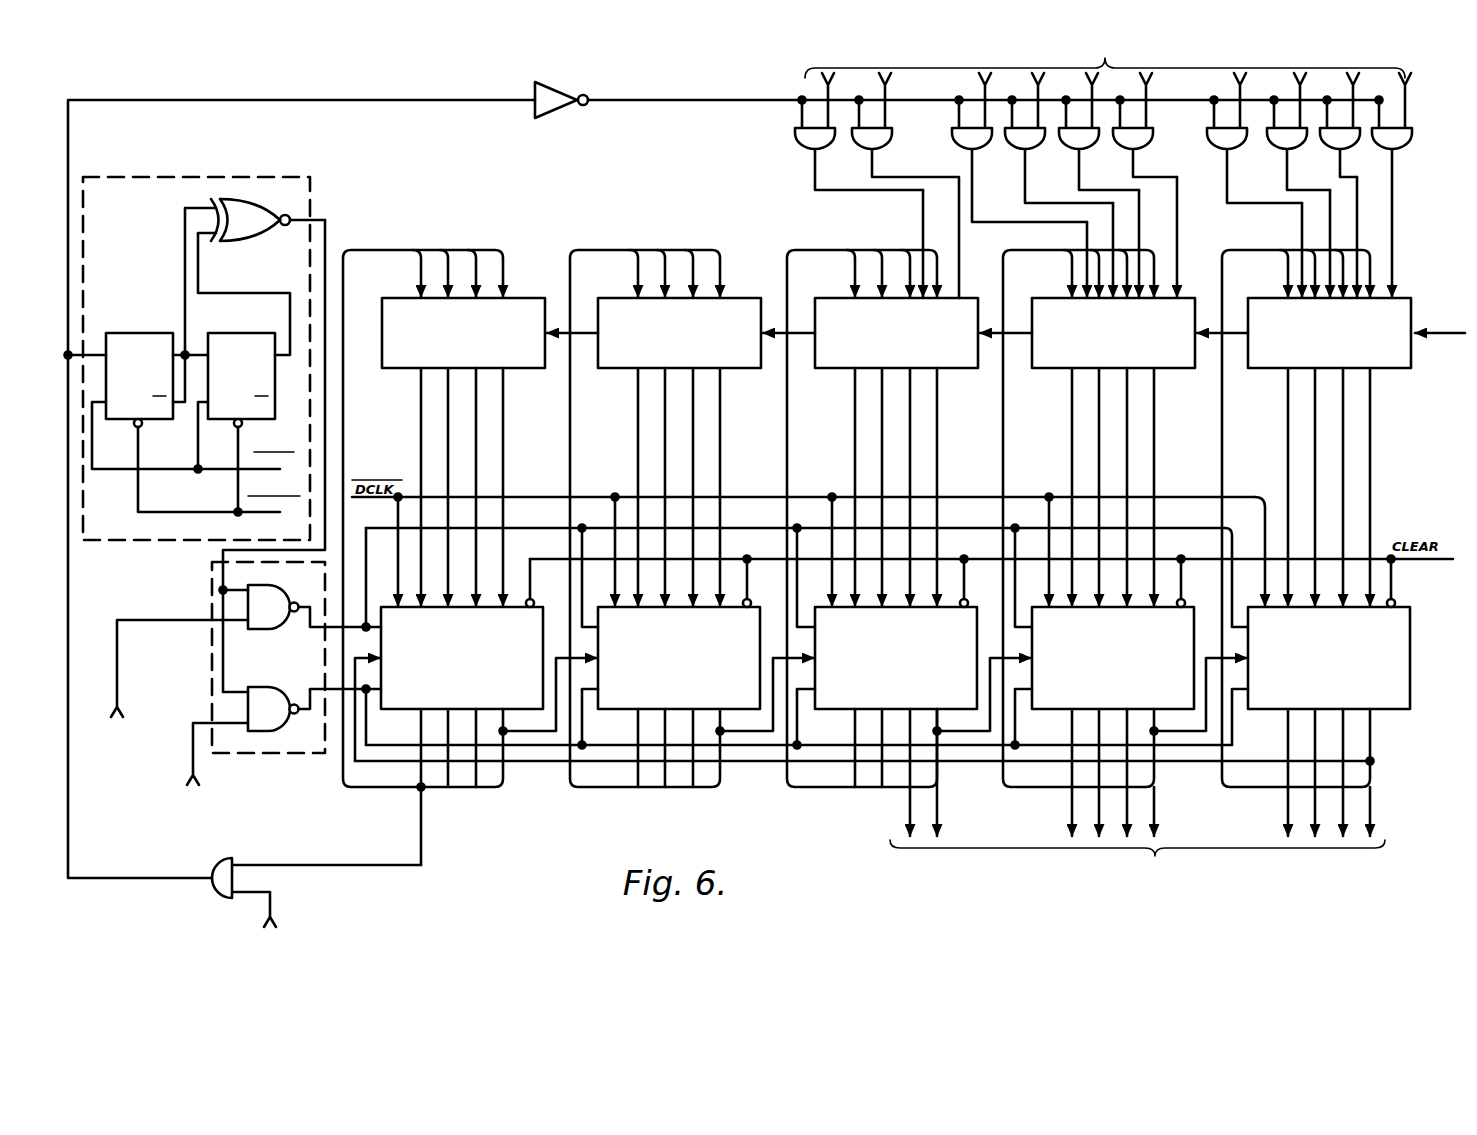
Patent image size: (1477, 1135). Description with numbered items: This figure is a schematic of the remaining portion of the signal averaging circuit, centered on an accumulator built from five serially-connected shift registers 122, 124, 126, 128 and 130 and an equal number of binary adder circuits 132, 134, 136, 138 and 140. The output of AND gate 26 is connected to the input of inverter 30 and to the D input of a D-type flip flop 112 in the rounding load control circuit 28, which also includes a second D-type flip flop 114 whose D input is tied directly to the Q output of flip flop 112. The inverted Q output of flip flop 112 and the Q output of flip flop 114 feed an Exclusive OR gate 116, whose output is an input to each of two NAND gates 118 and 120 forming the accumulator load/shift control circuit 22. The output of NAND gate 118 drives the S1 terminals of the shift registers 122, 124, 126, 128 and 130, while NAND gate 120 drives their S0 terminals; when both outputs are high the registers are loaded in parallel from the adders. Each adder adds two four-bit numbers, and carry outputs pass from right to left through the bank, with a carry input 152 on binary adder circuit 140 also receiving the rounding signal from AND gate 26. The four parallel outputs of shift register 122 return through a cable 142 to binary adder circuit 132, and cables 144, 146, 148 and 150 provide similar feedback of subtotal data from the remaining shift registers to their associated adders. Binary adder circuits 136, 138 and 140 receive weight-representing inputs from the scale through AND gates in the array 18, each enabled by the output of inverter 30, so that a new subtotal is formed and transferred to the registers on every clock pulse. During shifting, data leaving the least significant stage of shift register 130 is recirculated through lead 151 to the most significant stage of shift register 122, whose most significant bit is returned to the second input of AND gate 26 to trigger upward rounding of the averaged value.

The inverter 30 is at (570, 86).
The rounding load control circuit 28 is at (205, 177).
The Exclusive OR gate 116 is at (262, 242).
The D-type flip flop 112 is at (124, 333).
The second D-type flip flop 114 is at (236, 333).
The accumulator load/shift control circuit 22 is at (212, 652).
The NAND gate 118 is at (272, 568).
The NAND gate 120 is at (272, 686).
The AND gate 26 is at (210, 885).
The array of AND gates 18 is at (1196, 154).
The binary adder circuit 132 is at (528, 370).
The binary adder circuit 134 is at (744, 370).
The binary adder circuit 136 is at (960, 370).
The binary adder circuit 138 is at (1175, 370).
The binary adder circuit 140 is at (1395, 370).
The cable 142 is at (346, 412).
The cable 144 is at (573, 420).
The cable 146 is at (790, 438).
The cable 148 is at (1006, 422).
The cable 150 is at (1226, 422).
The shift register 122 is at (396, 709).
The shift register 124 is at (614, 709).
The shift register 126 is at (831, 709).
The shift register 128 is at (1046, 709).
The shift register 130 is at (1265, 712).
The carry input 152 is at (1445, 333).
The lead 151 is at (1187, 765).